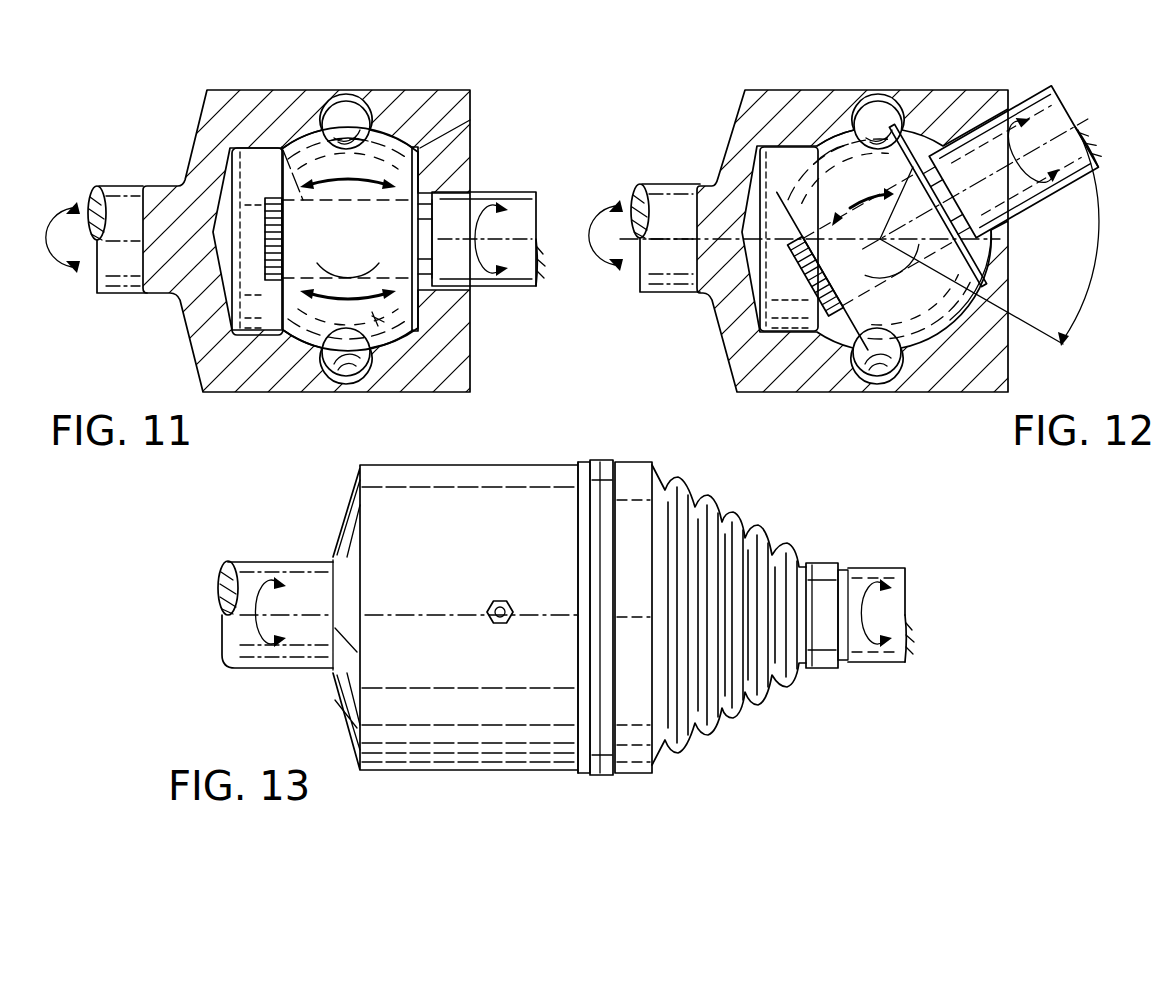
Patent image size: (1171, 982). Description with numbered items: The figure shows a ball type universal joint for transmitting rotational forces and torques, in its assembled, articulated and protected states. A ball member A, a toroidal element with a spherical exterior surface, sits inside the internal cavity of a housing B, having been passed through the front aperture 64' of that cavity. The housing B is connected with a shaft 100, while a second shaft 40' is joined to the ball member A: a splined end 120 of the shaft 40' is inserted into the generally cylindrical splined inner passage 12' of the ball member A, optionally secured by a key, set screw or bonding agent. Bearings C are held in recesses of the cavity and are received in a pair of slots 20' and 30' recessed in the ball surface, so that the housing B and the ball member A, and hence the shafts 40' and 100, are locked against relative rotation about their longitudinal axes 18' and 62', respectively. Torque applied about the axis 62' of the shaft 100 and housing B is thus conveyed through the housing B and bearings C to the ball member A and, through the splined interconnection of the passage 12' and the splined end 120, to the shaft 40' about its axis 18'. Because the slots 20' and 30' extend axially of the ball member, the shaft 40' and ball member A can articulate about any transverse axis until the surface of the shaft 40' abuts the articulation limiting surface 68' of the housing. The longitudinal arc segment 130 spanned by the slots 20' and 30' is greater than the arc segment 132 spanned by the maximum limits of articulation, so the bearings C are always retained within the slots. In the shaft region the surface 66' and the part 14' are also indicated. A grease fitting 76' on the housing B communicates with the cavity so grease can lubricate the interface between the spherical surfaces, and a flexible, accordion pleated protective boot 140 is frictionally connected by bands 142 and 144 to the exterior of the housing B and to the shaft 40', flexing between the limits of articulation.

In FIG. 11, the shaft 100 is at (128, 185).
In FIG. 12, the shaft 100 is at (672, 183).
In FIG. 13, the shaft 100 is at (250, 558).
In FIG. 11, the inner race 14' is at (284, 146).
In FIG. 11, the splined end 120 is at (274, 196).
In FIG. 11, the slot 20' is at (377, 154).
In FIG. 12, the slot 20' is at (820, 149).
In FIG. 11, the articulation limiting surface 68' is at (483, 126).
In FIG. 11, the shaft collar 66' is at (488, 217).
In FIG. 11, the shaft 40' is at (514, 229).
In FIG. 12, the shaft 40' is at (1017, 143).
In FIG. 13, the shaft 40' is at (891, 579).
In FIG. 11, the splined inner passage 12' is at (375, 317).
In FIG. 11, the slot 30' is at (400, 345).
In FIG. 12, the slot 30' is at (975, 283).
In FIG. 12, the longitudinal axis 62' is at (730, 191).
In FIG. 12, the longitudinal arc segment 130 is at (834, 222).
In FIG. 12, the arc segment 132 is at (1092, 226).
In FIG. 12, the longitudinal axis 18' is at (1111, 94).
In FIG. 12, the front aperture 64' is at (1026, 359).
In FIG. 13, the band 142 is at (600, 458).
In FIG. 13, the band 144 is at (820, 562).
In FIG. 13, the protective boot 140 is at (698, 722).
In FIG. 13, the grease fitting 76' is at (470, 592).
In FIG. 11, the ball member A is at (286, 298).
In FIG. 12, the ball member A is at (834, 348).
In FIG. 11, the housing B is at (425, 100).
In FIG. 12, the housing B is at (850, 100).
In FIG. 13, the housing B is at (395, 468).
In FIG. 11, the bearings C is at (338, 110).
In FIG. 12, the bearings C is at (879, 106).